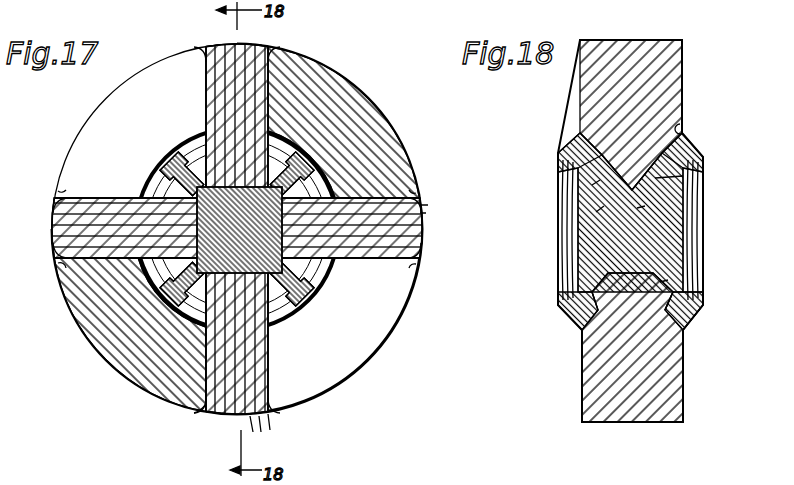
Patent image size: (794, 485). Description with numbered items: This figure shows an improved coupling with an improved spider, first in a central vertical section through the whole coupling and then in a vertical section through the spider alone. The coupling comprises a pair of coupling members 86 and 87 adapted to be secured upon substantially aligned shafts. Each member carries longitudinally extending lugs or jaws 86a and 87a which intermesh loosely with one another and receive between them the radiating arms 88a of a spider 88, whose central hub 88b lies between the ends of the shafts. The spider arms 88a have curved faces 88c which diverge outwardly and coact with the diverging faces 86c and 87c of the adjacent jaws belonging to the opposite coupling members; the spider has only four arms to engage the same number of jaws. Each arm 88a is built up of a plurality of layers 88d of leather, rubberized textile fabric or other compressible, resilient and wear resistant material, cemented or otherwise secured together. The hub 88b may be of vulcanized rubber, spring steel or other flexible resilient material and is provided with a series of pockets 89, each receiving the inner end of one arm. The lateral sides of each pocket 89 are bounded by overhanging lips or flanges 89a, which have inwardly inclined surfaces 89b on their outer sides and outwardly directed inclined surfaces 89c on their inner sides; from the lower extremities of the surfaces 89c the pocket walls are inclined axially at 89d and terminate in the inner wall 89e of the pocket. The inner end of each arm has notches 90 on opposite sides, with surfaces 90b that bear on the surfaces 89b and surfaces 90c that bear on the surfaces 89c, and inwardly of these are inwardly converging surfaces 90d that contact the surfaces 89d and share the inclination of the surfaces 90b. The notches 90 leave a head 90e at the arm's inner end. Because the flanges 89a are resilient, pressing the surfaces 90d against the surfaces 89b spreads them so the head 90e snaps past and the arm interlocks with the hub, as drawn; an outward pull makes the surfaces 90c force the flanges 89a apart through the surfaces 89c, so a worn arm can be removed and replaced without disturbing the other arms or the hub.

In FIG. 17, the coupling member 86 is at (108, 362).
In FIG. 17, the lugs or jaws 86a is at (356, 106).
In FIG. 17, the diverging faces 86c is at (201, 416).
In FIG. 17, the coupling member 87 is at (383, 350).
In FIG. 17, the lugs or jaws 87a is at (106, 100).
In FIG. 17, the diverging faces 87c is at (197, 48).
In FIG. 17, the spider 88 is at (50, 225).
In FIG. 17, the radiating arms 88a is at (222, 44).
In FIG. 18, the radiating arms 88a is at (684, 55).
In FIG. 17, the central hub 88b is at (205, 205).
In FIG. 18, the central hub 88b is at (602, 233).
In FIG. 17, the curved faces 88c is at (422, 191).
In FIG. 17, the layers 88d is at (425, 208).
In FIG. 17, the pockets 89 is at (318, 302).
In FIG. 18, the pockets 89 is at (632, 190).
In FIG. 18, the overhanging lips or flanges 89a is at (688, 146).
In FIG. 17, the inwardly inclined surfaces 89b is at (278, 320).
In FIG. 18, the inwardly inclined surfaces 89b is at (688, 121).
In FIG. 18, the outwardly directed inclined surfaces 89c is at (702, 164).
In FIG. 18, the axially inclined pocket walls 89d is at (655, 178).
In FIG. 18, the inner wall of the pocket 89e is at (637, 208).
In FIG. 18, the notches 90 is at (566, 151).
In FIG. 18, the notch surfaces 90b is at (575, 136).
In FIG. 18, the notch surfaces 90c is at (580, 161).
In FIG. 18, the inwardly converging surfaces 90d is at (592, 185).
In FIG. 18, the head 90e is at (596, 212).